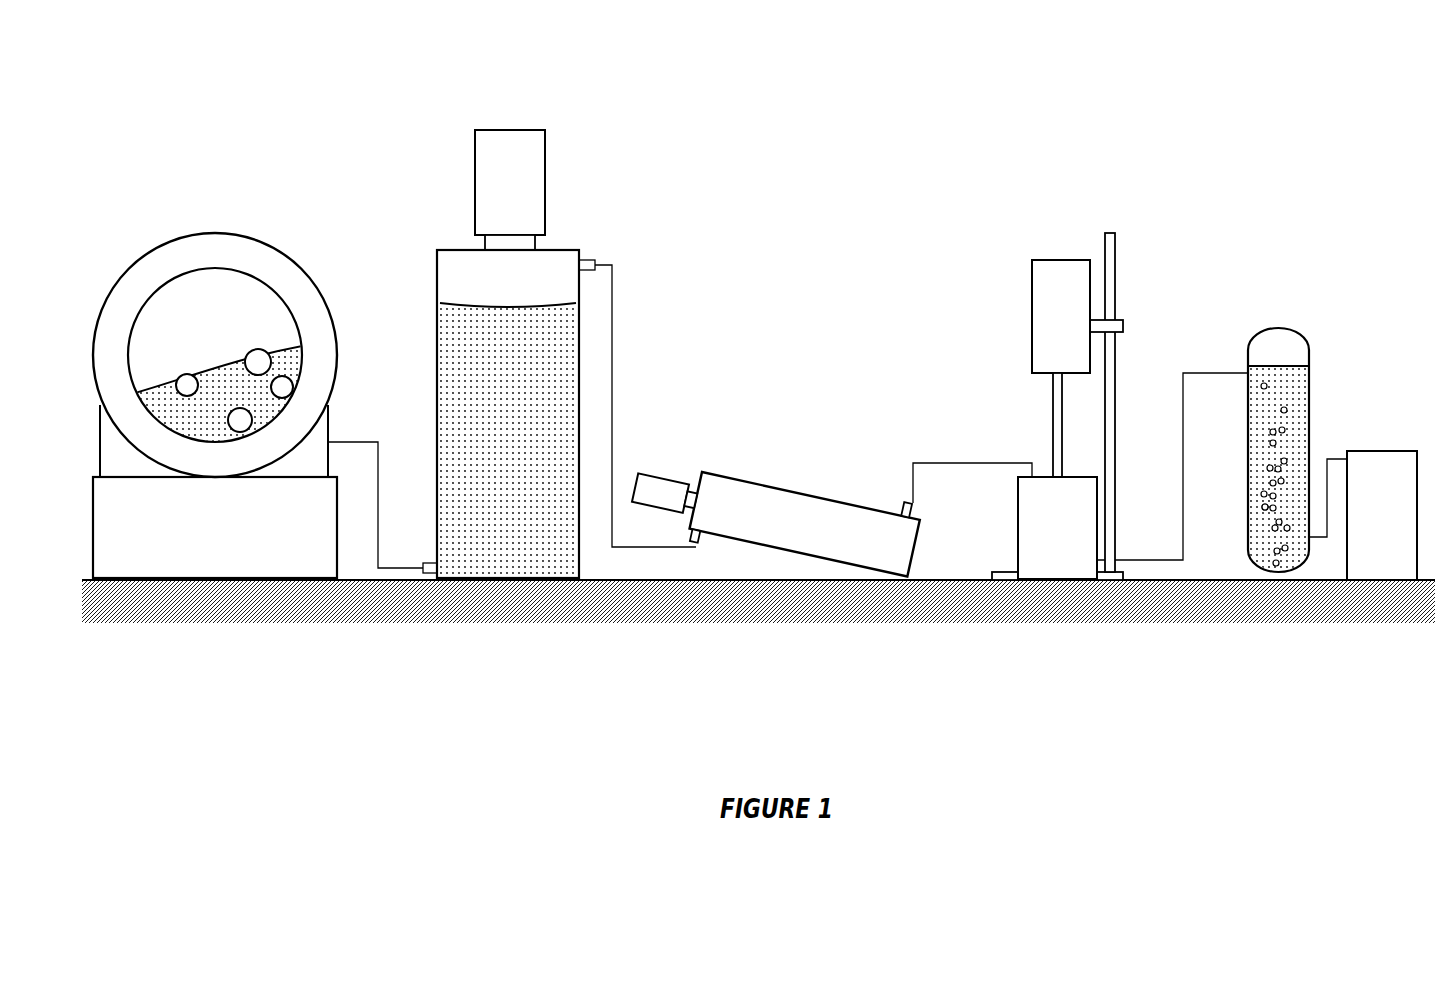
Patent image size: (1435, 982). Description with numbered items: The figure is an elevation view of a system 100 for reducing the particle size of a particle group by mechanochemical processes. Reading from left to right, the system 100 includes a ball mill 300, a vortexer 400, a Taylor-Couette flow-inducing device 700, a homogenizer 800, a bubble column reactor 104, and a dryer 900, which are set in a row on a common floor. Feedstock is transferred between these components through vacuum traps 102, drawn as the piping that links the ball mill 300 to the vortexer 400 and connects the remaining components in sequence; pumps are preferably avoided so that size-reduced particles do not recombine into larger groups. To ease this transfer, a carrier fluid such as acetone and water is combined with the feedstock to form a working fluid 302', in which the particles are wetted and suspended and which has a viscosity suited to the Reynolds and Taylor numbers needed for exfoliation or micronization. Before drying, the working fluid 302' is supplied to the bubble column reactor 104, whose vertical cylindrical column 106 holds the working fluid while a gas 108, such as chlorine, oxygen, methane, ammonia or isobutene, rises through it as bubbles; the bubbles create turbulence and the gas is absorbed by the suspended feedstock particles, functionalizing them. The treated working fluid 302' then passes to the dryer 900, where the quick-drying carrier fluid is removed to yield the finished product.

The system 100 is at (262, 178).
The ball mill 300 is at (200, 230).
The vortexer 400 is at (474, 122).
The vacuum traps 102 is at (392, 567).
The Taylor-Couette flow-inducing device 700 is at (860, 480).
The homogenizer 800 is at (1062, 258).
The bubble column reactor 104 is at (1280, 325).
The working fluid 302' is at (1242, 474).
The vertical cylindrical column 106 is at (1247, 462).
The gas 108 is at (1265, 508).
The dryer 900 is at (1400, 448).